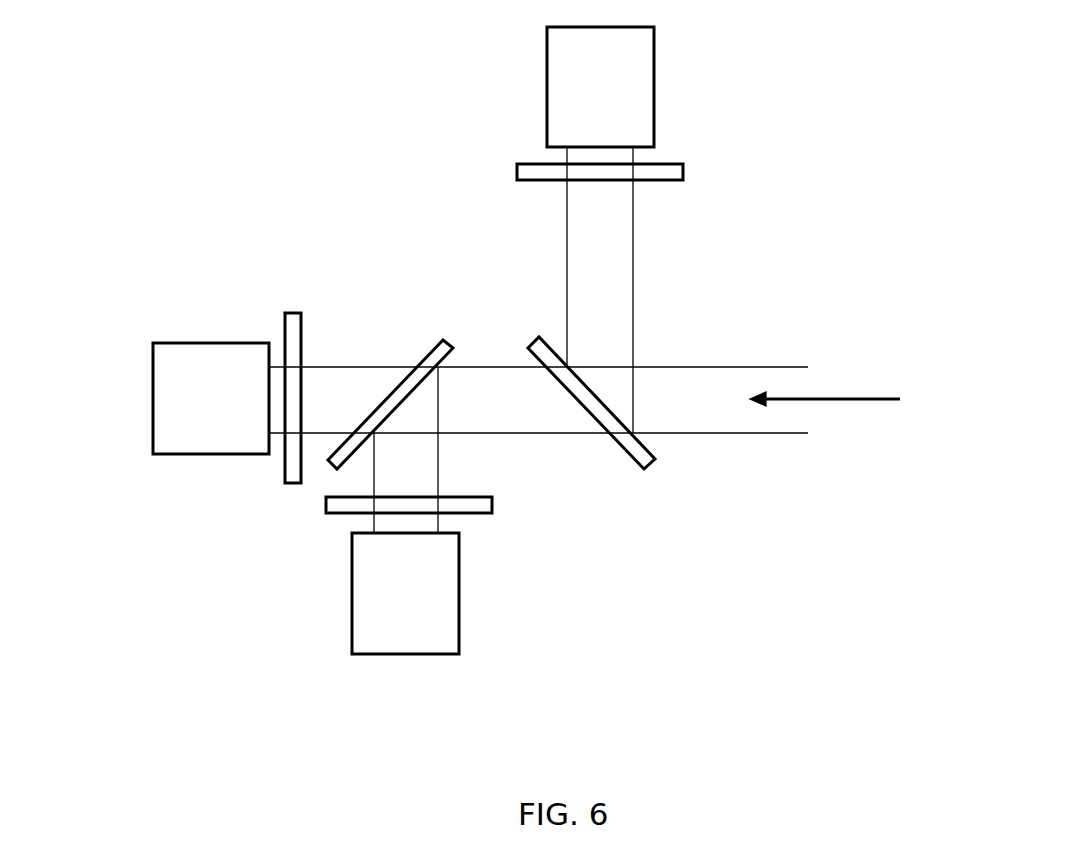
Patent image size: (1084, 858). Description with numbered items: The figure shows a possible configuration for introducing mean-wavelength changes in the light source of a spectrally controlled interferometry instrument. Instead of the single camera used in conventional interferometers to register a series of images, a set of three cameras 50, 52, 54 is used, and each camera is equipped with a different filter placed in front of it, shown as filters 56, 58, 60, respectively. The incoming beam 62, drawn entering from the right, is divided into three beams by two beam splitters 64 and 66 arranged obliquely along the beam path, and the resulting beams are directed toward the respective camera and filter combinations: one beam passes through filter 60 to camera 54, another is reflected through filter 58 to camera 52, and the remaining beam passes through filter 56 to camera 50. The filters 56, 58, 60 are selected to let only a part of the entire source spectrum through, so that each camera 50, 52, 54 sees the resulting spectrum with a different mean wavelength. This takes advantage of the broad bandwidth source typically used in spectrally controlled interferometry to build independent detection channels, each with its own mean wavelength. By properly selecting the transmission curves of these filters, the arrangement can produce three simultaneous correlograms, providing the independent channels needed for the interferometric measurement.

The camera 50 is at (459, 593).
The camera 52 is at (152, 442).
The camera 54 is at (654, 83).
The filter 56 is at (323, 510).
The filter 58 is at (302, 318).
The filter 60 is at (683, 172).
The incoming beam 62 is at (873, 398).
The beam splitter 64 is at (656, 473).
The beam splitter 66 is at (443, 340).